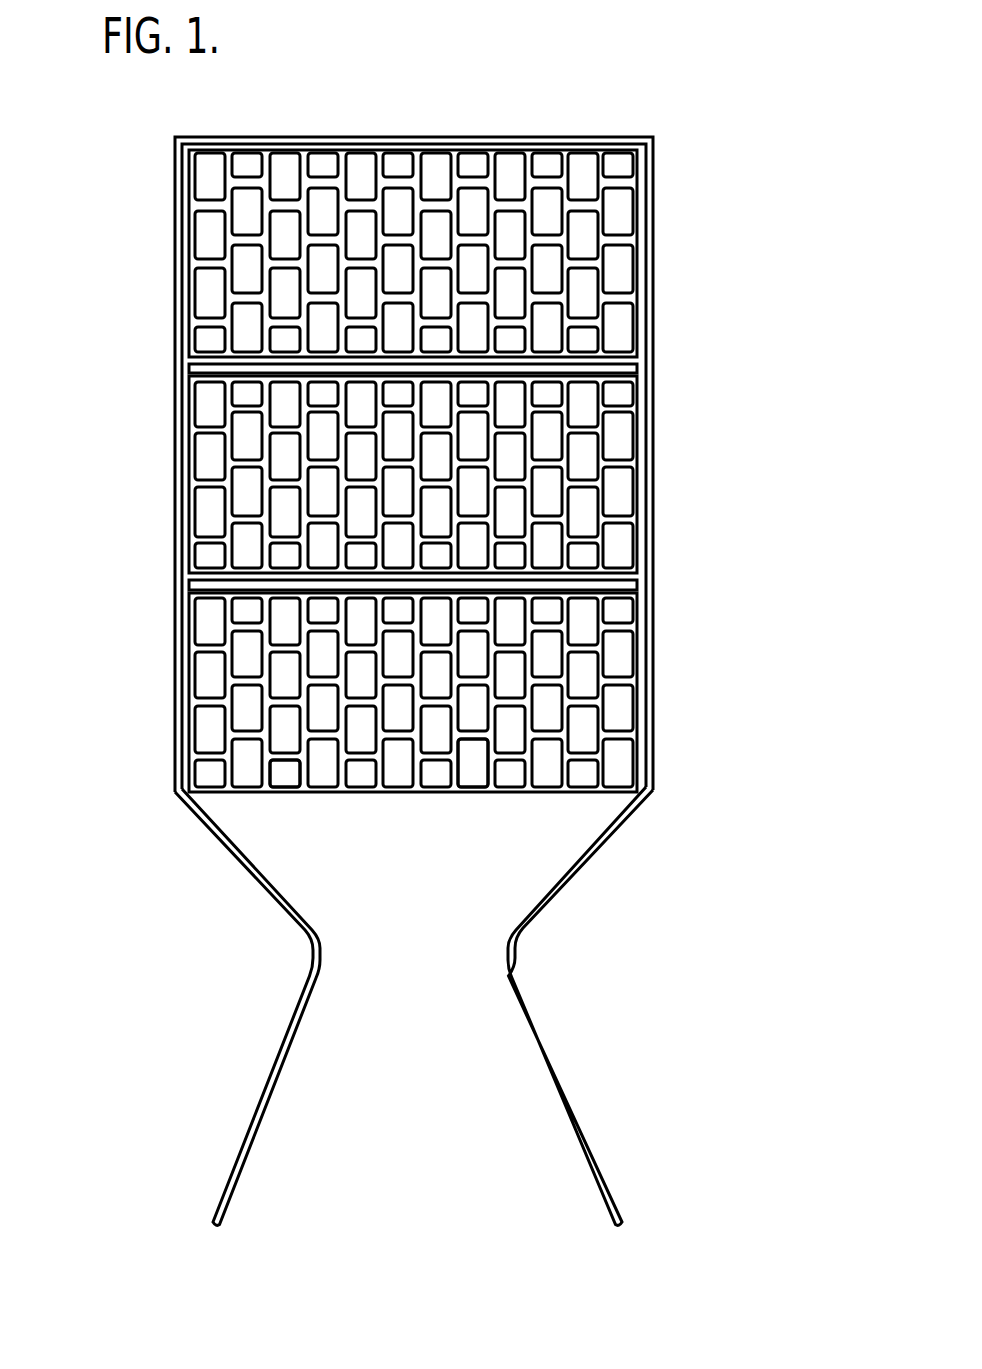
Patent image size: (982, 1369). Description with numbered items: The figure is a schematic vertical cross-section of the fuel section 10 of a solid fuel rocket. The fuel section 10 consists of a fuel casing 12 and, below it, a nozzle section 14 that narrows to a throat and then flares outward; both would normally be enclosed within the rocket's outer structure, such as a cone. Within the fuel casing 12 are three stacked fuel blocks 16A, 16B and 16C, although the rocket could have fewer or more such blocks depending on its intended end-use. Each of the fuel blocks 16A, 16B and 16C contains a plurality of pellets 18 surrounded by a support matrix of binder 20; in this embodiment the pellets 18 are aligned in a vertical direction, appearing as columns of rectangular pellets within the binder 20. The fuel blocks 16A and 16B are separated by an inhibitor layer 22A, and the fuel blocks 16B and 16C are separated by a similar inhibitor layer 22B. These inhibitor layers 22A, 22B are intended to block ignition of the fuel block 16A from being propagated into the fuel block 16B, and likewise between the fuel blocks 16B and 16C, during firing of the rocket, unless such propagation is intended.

The fuel section 10 is at (147, 652).
The fuel casing 12 is at (653, 492).
The nozzle section 14 is at (570, 1092).
The fuel block 16A is at (679, 713).
The fuel block 16B is at (155, 478).
The fuel block 16C is at (688, 240).
The pellets 18 is at (287, 794).
The binder 20 is at (383, 804).
The inhibitor layer 22A is at (634, 581).
The inhibitor layer 22B is at (643, 358).